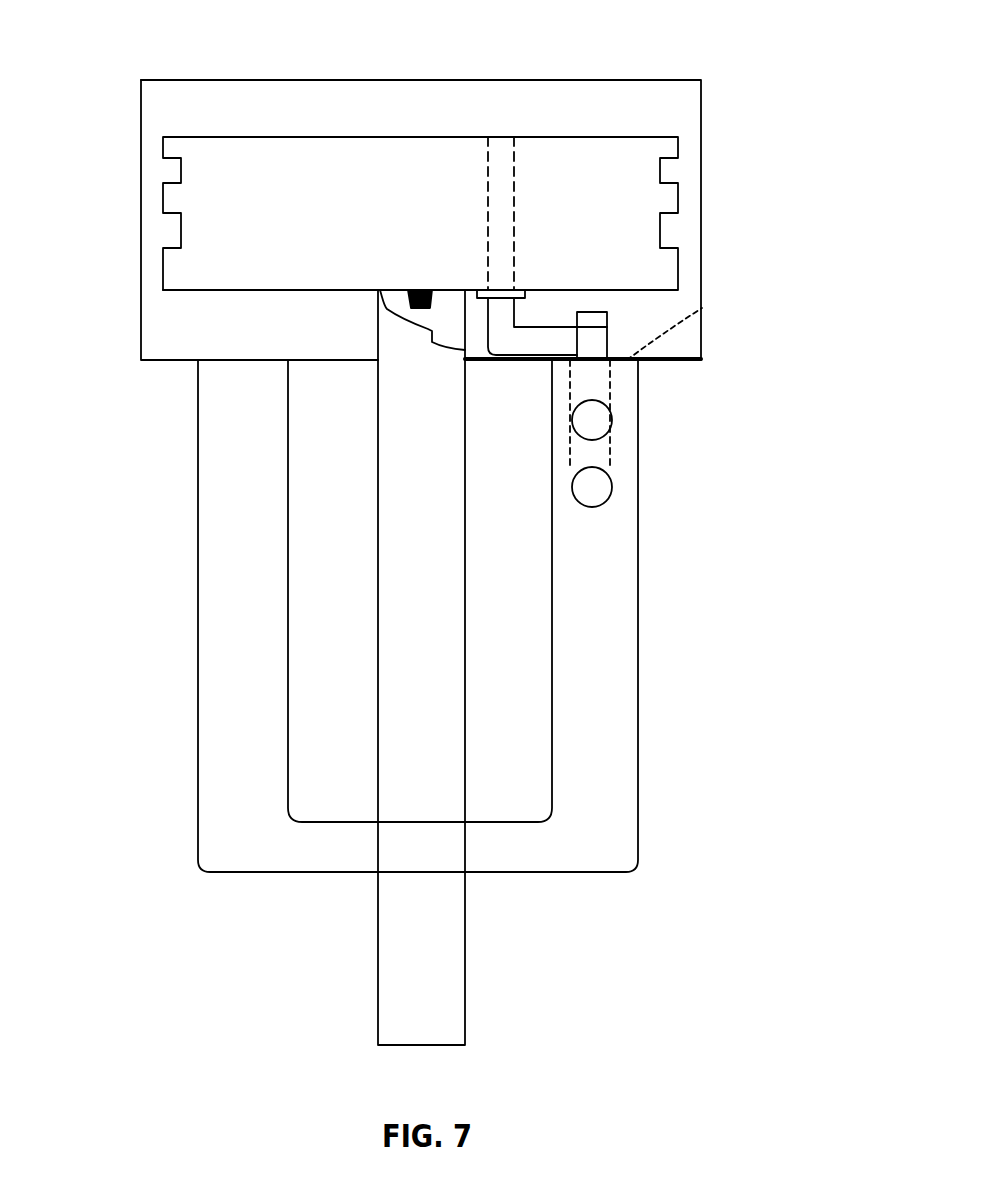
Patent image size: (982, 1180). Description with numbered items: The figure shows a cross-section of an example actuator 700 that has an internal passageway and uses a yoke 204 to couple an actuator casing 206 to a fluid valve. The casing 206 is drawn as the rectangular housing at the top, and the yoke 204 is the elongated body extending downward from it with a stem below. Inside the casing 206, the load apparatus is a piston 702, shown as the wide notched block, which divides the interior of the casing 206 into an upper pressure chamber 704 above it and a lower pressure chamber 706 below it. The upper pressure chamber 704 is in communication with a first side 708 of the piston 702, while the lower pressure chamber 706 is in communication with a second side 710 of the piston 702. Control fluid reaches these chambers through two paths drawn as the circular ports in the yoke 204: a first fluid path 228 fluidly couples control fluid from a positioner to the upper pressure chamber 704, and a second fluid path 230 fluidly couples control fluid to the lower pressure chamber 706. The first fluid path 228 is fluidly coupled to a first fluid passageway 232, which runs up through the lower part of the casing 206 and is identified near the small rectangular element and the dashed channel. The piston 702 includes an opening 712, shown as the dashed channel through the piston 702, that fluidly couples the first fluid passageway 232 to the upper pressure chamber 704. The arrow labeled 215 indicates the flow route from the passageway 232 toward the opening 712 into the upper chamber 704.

The actuator 700 is at (716, 58).
The actuator casing 206 is at (141, 114).
The upper pressure chamber 704 is at (338, 118).
The lower pressure chamber 706 is at (302, 335).
The piston 702 is at (197, 228).
The first side of the piston 708 is at (228, 137).
The second side of the piston 710 is at (177, 290).
The opening 712 is at (500, 147).
The flow path 215 is at (540, 306).
The first fluid passageway 232 is at (543, 327).
The yoke 204 is at (639, 830).
The second fluid path 230 is at (603, 422).
The first fluid path 228 is at (593, 490).